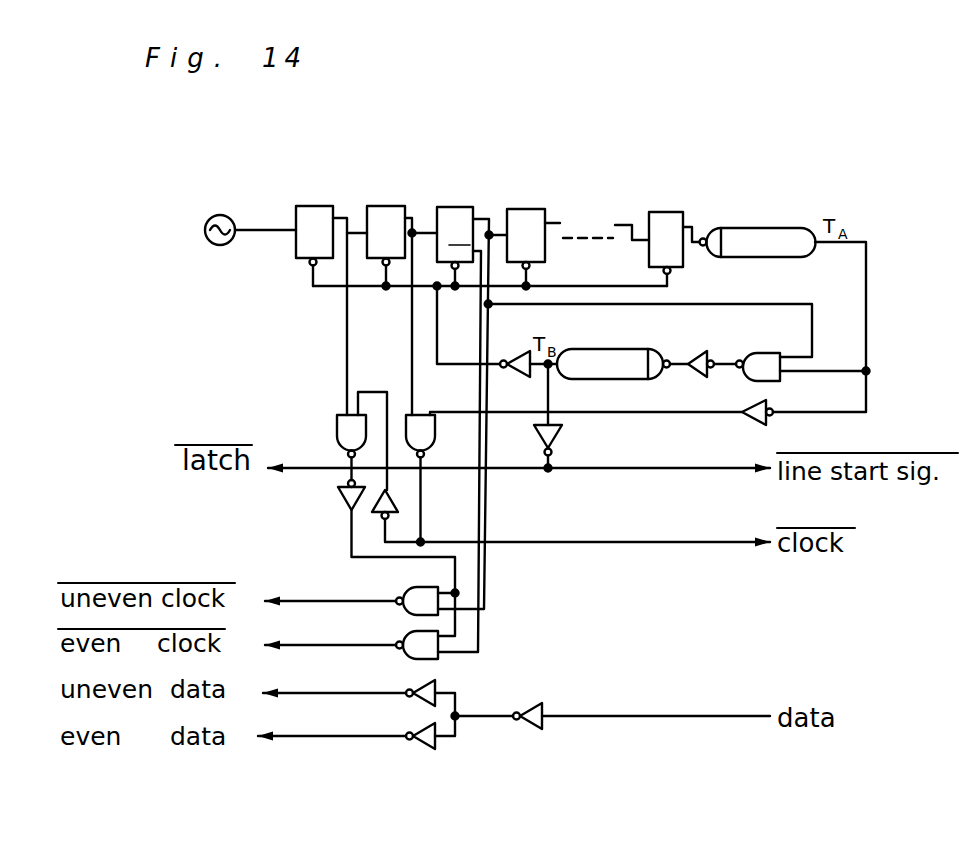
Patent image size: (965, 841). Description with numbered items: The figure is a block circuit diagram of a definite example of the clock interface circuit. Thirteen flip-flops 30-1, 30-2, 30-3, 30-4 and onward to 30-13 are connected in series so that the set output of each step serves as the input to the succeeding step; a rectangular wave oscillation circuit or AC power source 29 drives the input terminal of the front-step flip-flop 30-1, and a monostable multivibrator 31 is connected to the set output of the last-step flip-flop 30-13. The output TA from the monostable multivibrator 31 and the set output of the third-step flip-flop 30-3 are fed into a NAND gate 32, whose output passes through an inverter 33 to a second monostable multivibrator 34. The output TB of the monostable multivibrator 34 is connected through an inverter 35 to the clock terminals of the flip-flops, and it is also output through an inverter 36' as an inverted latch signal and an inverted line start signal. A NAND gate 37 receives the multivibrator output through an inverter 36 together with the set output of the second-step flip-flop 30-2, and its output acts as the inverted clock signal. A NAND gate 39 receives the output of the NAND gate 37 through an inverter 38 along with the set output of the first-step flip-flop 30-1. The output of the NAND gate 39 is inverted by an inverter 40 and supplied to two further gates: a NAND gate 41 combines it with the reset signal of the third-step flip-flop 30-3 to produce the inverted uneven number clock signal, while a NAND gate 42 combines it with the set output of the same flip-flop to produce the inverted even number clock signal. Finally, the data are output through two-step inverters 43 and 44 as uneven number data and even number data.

The rectangular wave oscillation circuit 29 is at (220, 214).
The flip-flop 30-1 is at (308, 206).
The flip-flop 30-2 is at (390, 206).
The flip-flop 30-3 is at (453, 207).
The flip-flop 30-4 is at (527, 209).
The flip-flop 30-13 is at (670, 212).
The monostable multivibrator 31 is at (767, 228).
The NAND gate 32 is at (765, 353).
The inverter 33 is at (697, 351).
The monostable multivibrator 34 is at (613, 349).
The inverter 35 is at (513, 352).
The inverter 36 is at (736, 428).
The inverter 36' is at (598, 446).
The NAND gate 37 is at (410, 415).
The inverter 38 is at (397, 505).
The NAND gate 39 is at (337, 427).
The inverter 40 is at (340, 498).
The NAND gate 41 is at (415, 587).
The NAND gate 42 is at (412, 631).
The inverter 43 is at (530, 702).
The inverter 44 is at (422, 680).